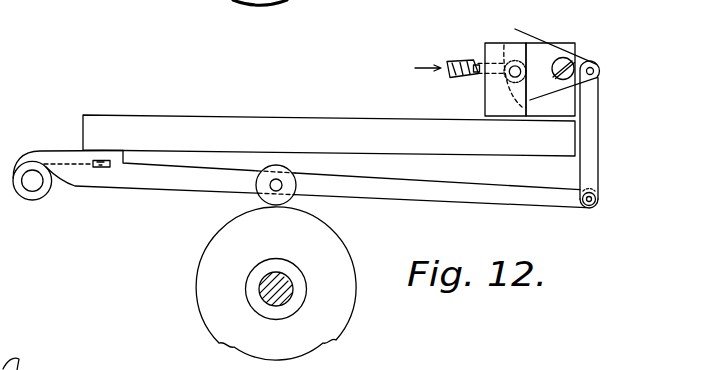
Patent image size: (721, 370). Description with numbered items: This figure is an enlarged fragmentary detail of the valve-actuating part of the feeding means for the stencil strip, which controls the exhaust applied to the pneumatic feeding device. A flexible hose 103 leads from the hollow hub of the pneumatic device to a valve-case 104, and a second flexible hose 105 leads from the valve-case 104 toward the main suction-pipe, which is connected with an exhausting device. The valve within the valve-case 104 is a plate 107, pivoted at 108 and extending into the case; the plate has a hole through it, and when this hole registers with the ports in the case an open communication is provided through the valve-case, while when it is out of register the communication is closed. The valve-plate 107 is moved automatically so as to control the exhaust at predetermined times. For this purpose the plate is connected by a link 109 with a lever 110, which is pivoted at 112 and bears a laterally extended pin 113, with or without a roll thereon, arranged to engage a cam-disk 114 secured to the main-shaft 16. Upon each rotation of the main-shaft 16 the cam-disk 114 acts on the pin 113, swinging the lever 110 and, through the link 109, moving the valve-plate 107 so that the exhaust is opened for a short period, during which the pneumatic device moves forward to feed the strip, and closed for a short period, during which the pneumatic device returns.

The main-shaft 16 is at (259, 284).
The flexible hose 103 is at (505, 78).
The valve-case 104 is at (498, 46).
The flexible hose 105 is at (462, 60).
The valve-plate 107 is at (535, 43).
The pivot 108 is at (565, 63).
The link 109 is at (593, 135).
The lever 110 is at (482, 197).
The pivot 112 is at (33, 183).
The laterally extended pin 113 is at (268, 190).
The cam-disk 114 is at (342, 265).